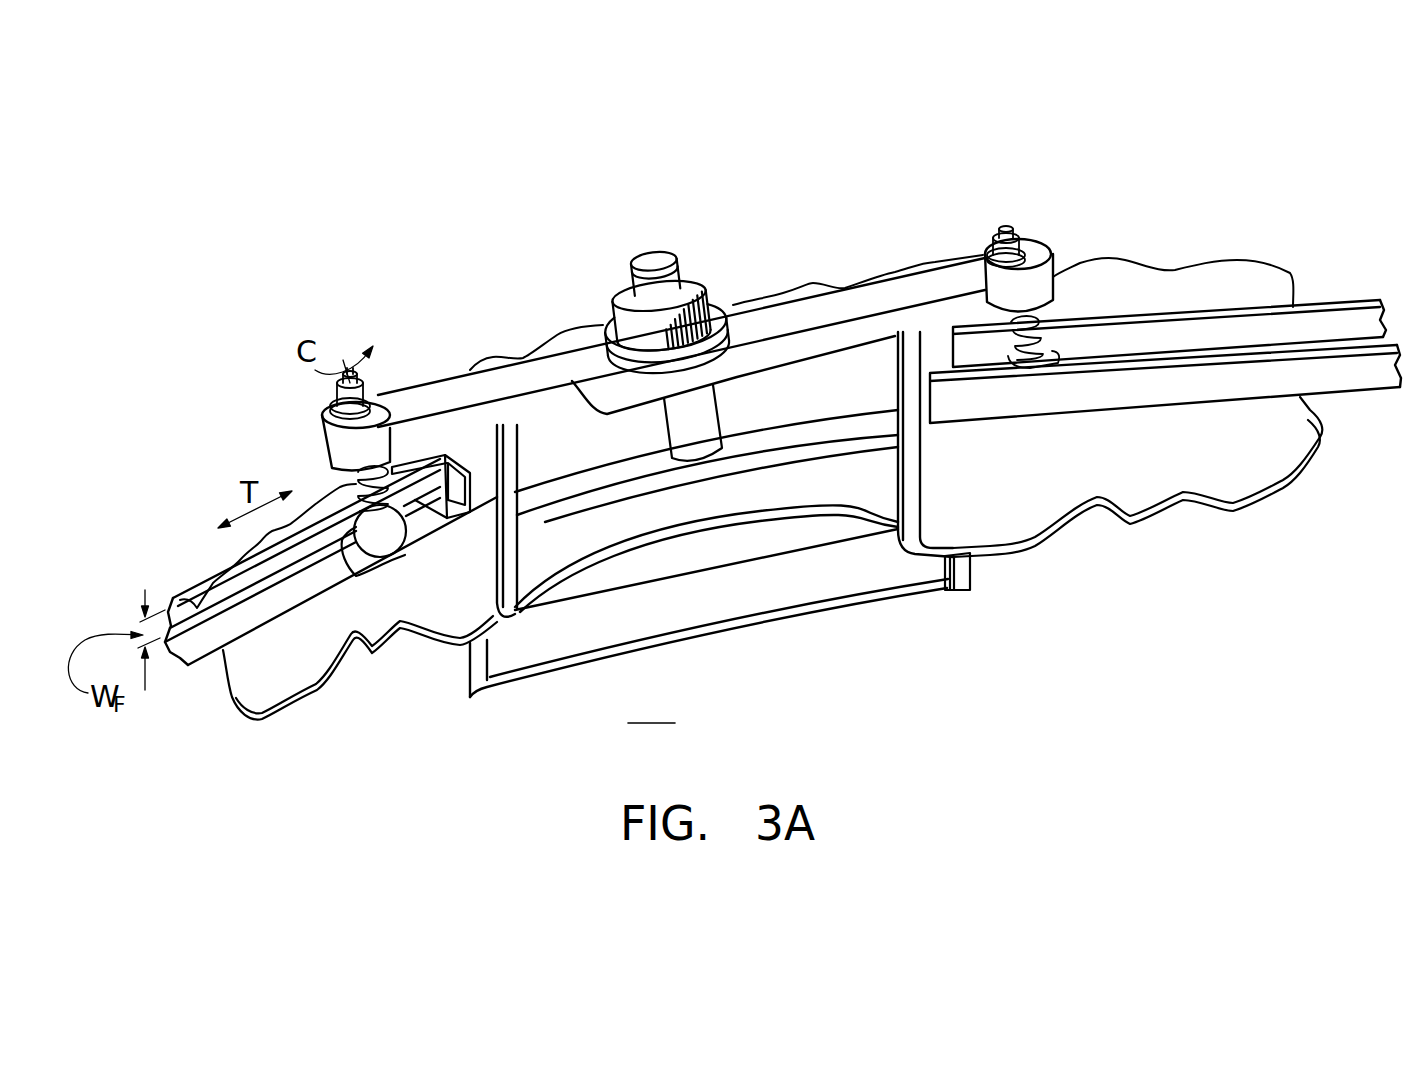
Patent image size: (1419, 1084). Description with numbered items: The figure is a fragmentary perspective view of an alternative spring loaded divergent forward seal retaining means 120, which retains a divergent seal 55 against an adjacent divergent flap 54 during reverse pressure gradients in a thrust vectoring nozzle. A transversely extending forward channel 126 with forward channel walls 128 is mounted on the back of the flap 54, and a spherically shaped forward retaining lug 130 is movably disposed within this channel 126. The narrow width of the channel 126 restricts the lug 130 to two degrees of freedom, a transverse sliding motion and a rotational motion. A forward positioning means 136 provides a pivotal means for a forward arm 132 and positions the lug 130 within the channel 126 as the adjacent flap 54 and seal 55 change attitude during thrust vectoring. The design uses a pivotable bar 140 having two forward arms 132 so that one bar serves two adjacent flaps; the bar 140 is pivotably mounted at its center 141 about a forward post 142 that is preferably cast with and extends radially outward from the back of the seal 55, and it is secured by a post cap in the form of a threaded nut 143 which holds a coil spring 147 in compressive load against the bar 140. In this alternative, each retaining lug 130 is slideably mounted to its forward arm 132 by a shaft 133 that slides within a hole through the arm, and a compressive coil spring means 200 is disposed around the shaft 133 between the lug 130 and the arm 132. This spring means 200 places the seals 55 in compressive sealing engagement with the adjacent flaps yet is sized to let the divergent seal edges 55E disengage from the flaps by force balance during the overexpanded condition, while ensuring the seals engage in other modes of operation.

The spring loaded divergent forward seal retaining means 120 is at (935, 514).
The forward channel 126 is at (362, 574).
The forward channel walls 128 is at (187, 597).
The forward retaining lug 130 is at (393, 547).
The forward arm 132 is at (403, 397).
The shaft 133 is at (415, 547).
The forward positioning means 136 is at (383, 378).
The pivotable bar 140 is at (558, 335).
The center 141 is at (715, 377).
The forward post 142 is at (680, 427).
The threaded nut 143 is at (725, 298).
The coil spring 147 is at (407, 460).
The compressive coil spring means 200 is at (342, 486).
The divergent flap 54 is at (323, 690).
The seal 55 is at (781, 620).
The divergent seal edges 55E is at (967, 572).